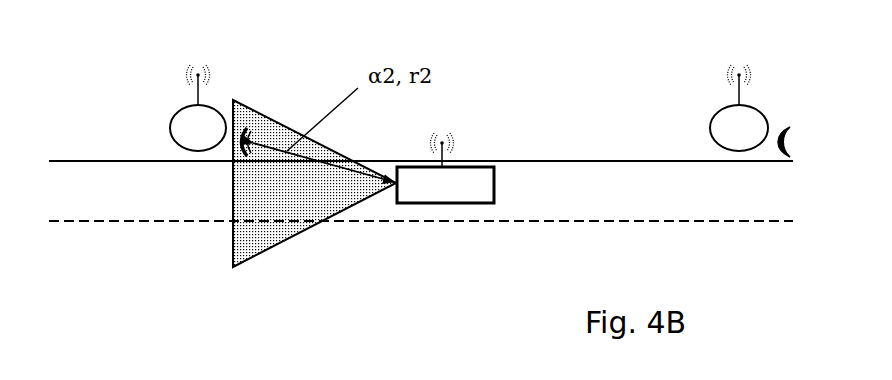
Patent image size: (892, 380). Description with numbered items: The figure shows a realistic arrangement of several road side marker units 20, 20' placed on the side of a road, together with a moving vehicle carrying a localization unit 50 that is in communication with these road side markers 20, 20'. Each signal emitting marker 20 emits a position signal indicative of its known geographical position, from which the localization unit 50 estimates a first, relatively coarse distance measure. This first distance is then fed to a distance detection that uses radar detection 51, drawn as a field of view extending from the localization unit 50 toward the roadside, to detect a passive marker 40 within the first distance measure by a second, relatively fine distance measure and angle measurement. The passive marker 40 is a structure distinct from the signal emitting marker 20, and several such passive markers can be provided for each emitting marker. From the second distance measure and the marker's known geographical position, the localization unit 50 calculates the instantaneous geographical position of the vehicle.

The signal emitting marker 20 is at (176, 108).
The road side marker unit 20' is at (760, 111).
The passive marker 40 is at (250, 131).
The localization unit 50 is at (432, 195).
The radar detection 51 is at (289, 195).